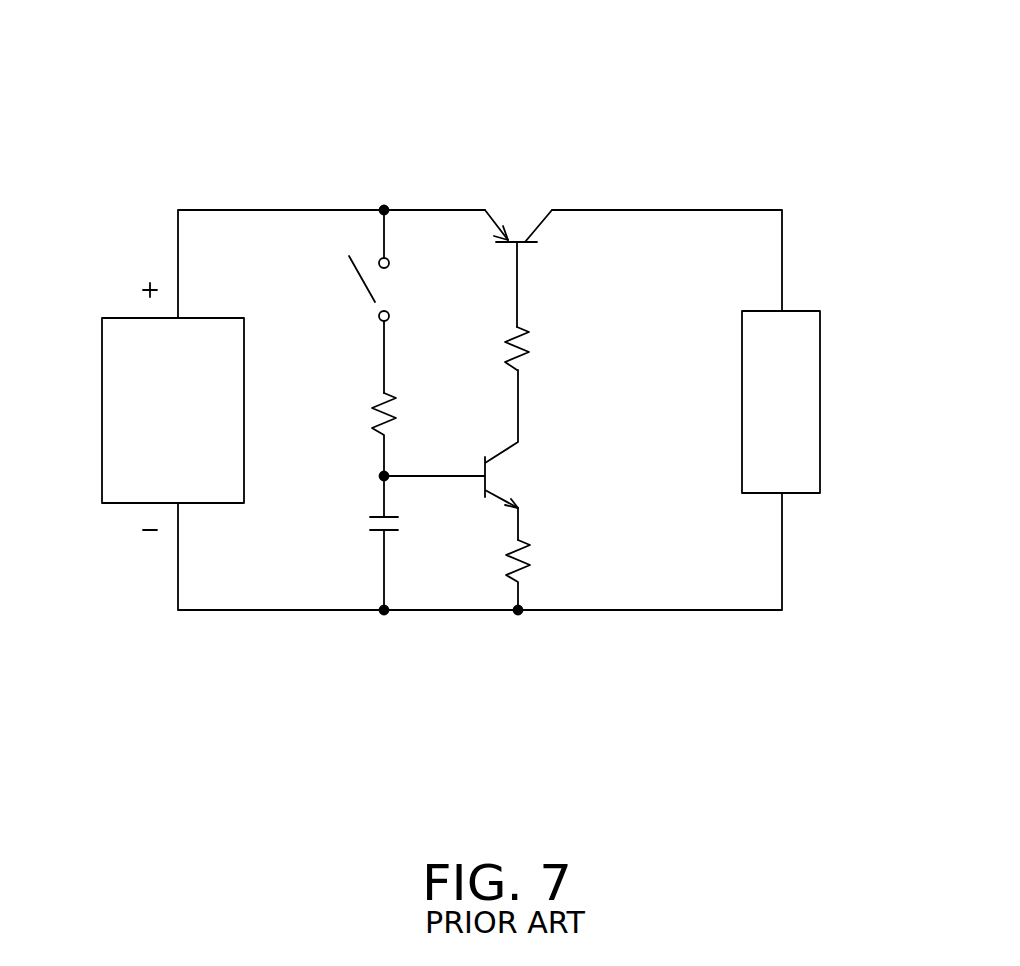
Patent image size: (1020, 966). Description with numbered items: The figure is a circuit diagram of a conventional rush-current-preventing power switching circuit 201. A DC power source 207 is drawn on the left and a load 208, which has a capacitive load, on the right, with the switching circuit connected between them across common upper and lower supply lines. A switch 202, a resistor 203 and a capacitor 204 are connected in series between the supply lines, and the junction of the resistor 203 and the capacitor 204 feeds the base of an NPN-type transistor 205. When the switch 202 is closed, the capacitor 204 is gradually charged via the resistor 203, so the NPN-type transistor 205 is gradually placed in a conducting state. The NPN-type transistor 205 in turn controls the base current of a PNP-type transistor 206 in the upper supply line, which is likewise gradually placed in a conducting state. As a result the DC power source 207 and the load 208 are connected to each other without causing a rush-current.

The prior art driving circuit 201 is at (582, 80).
The switch 202 is at (370, 300).
The resistor 203 is at (372, 414).
The capacitor 204 is at (370, 523).
The NPN-type transistor 205 is at (505, 474).
The PNP-type transistor 206 is at (518, 215).
The DC power source 207 is at (102, 462).
The load 208 is at (822, 400).